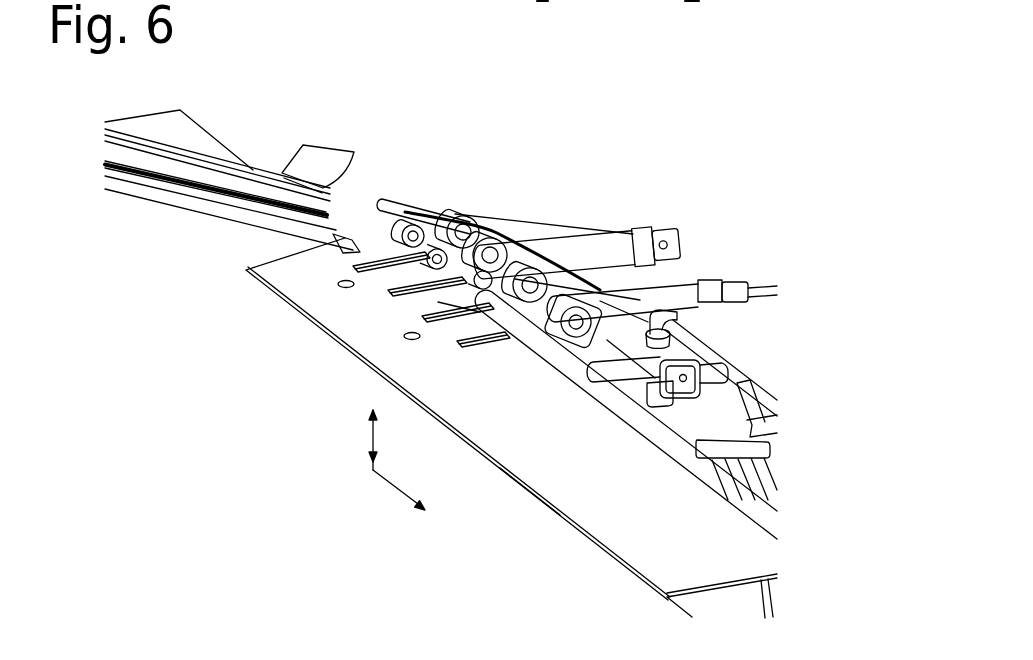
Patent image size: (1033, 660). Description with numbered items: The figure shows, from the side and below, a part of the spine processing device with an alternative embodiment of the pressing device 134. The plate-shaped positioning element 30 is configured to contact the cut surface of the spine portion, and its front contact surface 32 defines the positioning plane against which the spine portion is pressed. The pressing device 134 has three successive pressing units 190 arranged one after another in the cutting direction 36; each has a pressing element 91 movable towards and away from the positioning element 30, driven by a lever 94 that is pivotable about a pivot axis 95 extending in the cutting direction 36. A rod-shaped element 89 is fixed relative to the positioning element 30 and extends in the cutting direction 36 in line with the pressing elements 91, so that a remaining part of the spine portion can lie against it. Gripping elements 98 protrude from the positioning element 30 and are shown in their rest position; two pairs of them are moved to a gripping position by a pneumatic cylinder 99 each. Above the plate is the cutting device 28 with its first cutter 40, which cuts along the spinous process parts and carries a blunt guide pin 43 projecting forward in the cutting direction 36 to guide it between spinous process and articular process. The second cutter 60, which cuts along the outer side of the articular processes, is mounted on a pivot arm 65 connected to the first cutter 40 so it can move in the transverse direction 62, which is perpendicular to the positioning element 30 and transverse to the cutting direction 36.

The cutting device 28 is at (223, 229).
The first cutter 40 is at (187, 205).
The pivot arm 65 is at (223, 168).
The second cutter 60 is at (329, 160).
The guide pin 43 is at (349, 242).
The front contact surface 32 is at (543, 461).
The positioning element 30 is at (557, 518).
The gripping element 98 is at (422, 292).
The pressing unit 190 is at (407, 203).
The pressing element 91 is at (470, 270).
The lever 94 is at (421, 211).
The pivot axis 95 is at (550, 297).
The pneumatic cylinder 99 is at (678, 293).
The pressing device 134 is at (772, 262).
The rod-shaped element 89 is at (680, 446).
The transverse direction 62 is at (372, 441).
The cutting direction 36 is at (390, 490).